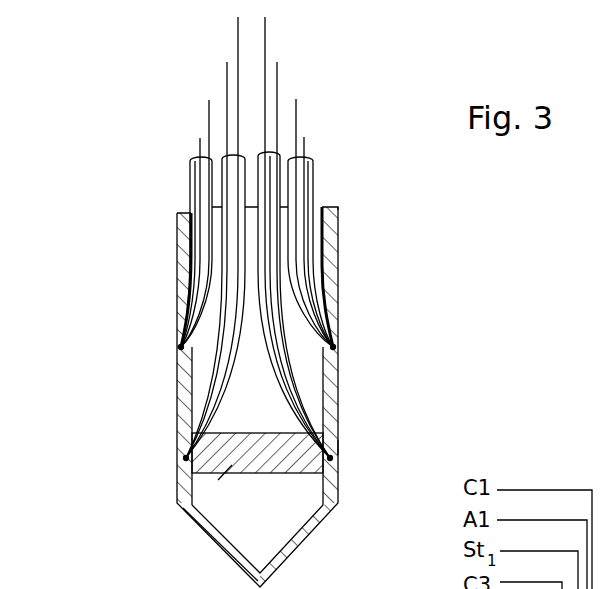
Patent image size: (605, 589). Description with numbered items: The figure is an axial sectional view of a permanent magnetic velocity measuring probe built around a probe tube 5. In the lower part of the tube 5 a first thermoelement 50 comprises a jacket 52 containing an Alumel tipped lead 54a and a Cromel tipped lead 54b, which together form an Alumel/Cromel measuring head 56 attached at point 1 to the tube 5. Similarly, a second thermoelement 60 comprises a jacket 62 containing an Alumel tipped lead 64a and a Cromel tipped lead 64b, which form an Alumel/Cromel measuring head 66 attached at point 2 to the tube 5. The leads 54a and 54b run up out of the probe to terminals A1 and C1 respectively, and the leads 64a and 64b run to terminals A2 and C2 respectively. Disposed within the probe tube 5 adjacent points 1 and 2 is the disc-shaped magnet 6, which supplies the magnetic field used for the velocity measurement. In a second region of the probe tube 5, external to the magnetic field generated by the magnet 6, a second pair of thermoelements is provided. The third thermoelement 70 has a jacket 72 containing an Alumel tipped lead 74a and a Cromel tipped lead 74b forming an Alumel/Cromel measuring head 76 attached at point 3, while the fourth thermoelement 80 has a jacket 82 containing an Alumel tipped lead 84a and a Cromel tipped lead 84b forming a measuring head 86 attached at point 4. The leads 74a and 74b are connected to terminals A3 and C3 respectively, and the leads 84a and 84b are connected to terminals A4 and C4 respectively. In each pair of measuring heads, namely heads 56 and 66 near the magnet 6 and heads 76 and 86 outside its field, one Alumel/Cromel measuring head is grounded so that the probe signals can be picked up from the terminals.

The point 1 is at (201, 310).
The point 2 is at (312, 311).
The point 3 is at (167, 340).
The point 4 is at (325, 255).
The tube 5 is at (199, 389).
The disc-shaped magnet 6 is at (212, 525).
The first thermoelement 50 is at (177, 407).
The jacket 52 is at (177, 461).
The Alumel tipped lead 54a is at (177, 435).
The Cromel tipped lead 54b is at (177, 415).
The Alumel/Cromel measuring head 56 is at (193, 478).
The second thermoelement 60 is at (314, 381).
The jacket 62 is at (325, 427).
The Alumel tipped lead 64a is at (300, 380).
The Cromel tipped lead 64b is at (323, 397).
The Alumel/Cromel measuring head 66 is at (338, 447).
The third thermoelement 70 is at (184, 269).
The jacket 72 is at (186, 251).
The Alumel tipped lead 74a is at (192, 214).
The Cromel tipped lead 74b is at (206, 175).
The Alumel/Cromel measuring head 76 is at (178, 340).
The fourth thermoelement 80 is at (319, 268).
The jacket 82 is at (321, 218).
The Alumel tipped lead 84a is at (310, 183).
The Cromel tipped lead 84b is at (313, 169).
The measuring head 86 is at (337, 332).
The terminal A1 is at (227, 62).
The terminal A2 is at (277, 62).
The terminal A3 is at (200, 138).
The terminal A4 is at (304, 137).
The terminal C1 is at (238, 17).
The terminal C2 is at (265, 17).
The terminal C3 is at (209, 100).
The terminal C4 is at (296, 99).